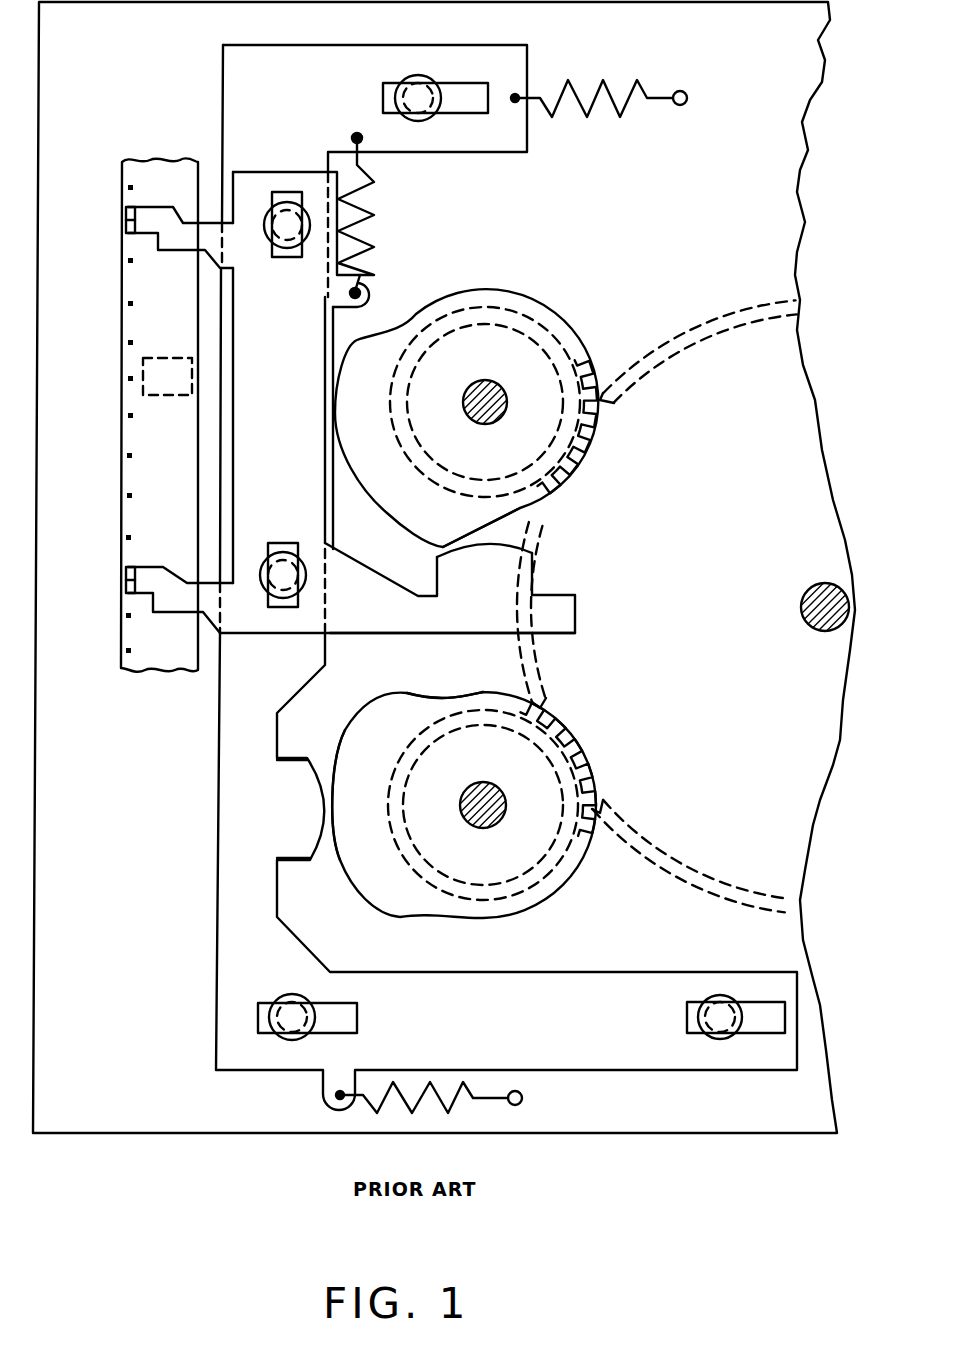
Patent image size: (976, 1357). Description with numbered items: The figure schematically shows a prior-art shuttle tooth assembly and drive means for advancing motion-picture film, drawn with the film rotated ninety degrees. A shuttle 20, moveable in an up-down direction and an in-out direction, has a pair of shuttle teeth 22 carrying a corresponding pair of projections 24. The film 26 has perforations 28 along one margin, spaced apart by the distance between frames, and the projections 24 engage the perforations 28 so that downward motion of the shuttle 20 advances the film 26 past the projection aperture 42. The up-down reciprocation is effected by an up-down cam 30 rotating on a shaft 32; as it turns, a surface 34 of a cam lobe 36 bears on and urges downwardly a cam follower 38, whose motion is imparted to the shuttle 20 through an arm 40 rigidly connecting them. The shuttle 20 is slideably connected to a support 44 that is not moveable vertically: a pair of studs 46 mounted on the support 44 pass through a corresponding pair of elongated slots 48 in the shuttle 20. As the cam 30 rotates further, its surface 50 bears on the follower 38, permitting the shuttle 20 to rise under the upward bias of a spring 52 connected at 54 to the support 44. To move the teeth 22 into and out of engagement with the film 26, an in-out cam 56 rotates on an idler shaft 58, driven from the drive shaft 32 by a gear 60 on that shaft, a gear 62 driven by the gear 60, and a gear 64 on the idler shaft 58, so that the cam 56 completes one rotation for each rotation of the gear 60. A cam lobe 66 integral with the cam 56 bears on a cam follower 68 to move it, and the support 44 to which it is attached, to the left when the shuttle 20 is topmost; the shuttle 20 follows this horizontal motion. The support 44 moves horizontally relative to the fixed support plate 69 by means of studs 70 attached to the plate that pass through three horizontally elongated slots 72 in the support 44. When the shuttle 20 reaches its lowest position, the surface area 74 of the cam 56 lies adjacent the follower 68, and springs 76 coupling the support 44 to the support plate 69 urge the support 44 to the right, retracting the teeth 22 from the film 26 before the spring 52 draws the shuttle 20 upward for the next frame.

The shuttle 20 is at (292, 413).
The shuttle teeth 22 is at (186, 188).
The projections 24 is at (125, 220).
The film 26 is at (122, 323).
The perforations 28 is at (130, 455).
The up-down cam 30 is at (542, 302).
The shaft 32 is at (502, 384).
The surface 34 is at (442, 548).
The cam lobe 36 is at (378, 516).
The cam follower 38 is at (438, 582).
The arm 40 is at (380, 636).
The projection aperture 42 is at (143, 392).
The support 44 is at (216, 733).
The studs 46 is at (265, 226).
The elongated slots 48 is at (292, 258).
The surface 50 is at (478, 536).
The spring 52 is at (378, 238).
The spring connection 54 is at (355, 137).
The in-out cam 56 is at (568, 883).
The idler shaft 58 is at (505, 822).
The gear 60 is at (582, 340).
The gear 62 is at (708, 681).
The gear 64 is at (480, 720).
The cam lobe 66 is at (360, 878).
The cam follower 68 is at (300, 762).
The support plate 69 is at (158, 1135).
The studs 70 is at (435, 83).
The horizontally elongated slots 72 is at (460, 114).
The surface area 74 is at (447, 700).
The springs 76 is at (598, 88).